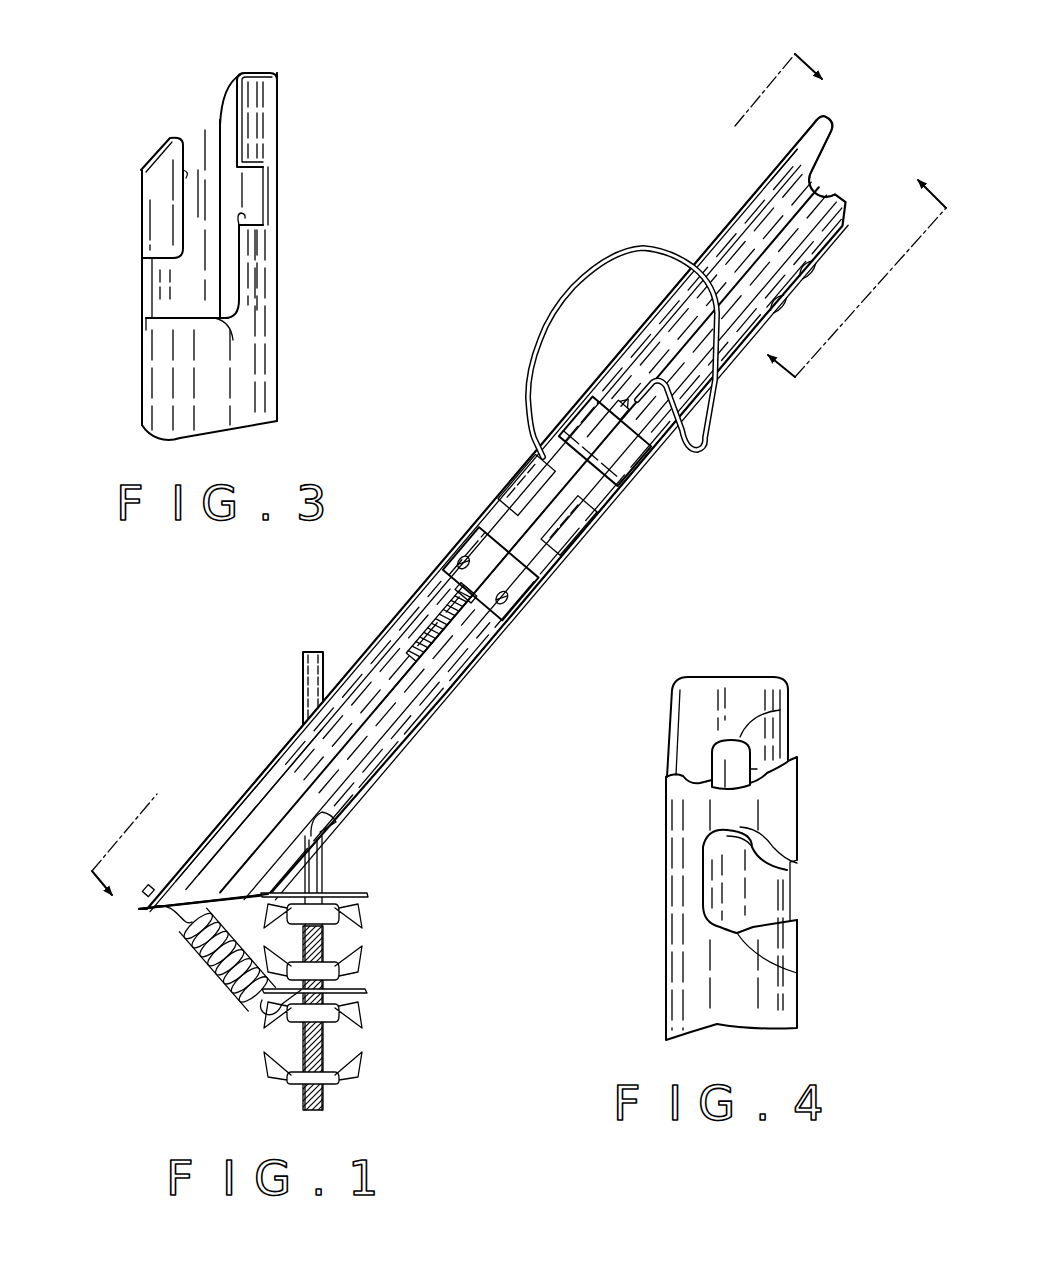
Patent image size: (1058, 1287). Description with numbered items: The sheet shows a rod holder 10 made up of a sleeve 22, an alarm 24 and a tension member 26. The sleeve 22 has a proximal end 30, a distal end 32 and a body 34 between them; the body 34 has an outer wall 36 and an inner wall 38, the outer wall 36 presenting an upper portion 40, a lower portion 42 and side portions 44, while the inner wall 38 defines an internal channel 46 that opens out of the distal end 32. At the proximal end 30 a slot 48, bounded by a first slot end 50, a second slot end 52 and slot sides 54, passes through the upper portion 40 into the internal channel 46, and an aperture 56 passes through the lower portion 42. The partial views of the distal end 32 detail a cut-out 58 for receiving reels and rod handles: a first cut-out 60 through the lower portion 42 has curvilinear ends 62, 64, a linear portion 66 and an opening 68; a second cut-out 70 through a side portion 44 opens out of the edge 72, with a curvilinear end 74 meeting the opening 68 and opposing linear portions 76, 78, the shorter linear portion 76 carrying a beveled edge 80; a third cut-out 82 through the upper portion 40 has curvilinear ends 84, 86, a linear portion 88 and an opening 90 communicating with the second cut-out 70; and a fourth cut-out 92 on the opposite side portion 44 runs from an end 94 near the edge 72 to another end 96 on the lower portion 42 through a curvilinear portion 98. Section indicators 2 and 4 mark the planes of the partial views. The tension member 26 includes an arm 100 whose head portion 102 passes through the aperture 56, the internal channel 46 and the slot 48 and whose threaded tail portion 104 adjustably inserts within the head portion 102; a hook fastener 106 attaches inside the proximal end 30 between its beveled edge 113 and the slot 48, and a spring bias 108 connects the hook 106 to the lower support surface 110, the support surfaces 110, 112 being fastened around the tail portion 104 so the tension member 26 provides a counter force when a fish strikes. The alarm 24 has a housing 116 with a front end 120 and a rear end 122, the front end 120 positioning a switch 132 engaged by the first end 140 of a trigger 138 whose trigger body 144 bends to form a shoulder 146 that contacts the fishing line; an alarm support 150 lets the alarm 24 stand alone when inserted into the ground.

In FIG. 1, the section line 2- 2 is at (468, 493).
In FIG. 1, the section lines 4- 4 is at (848, 263).
In FIG. 1, the rod holder 10 is at (438, 503).
In FIG. 1, the sleeve 22 is at (387, 610).
In FIG. 1, the alarm 24 is at (568, 479).
In FIG. 1, the tension member 26 is at (189, 991).
In FIG. 1, the proximal end 30 is at (187, 826).
In FIG. 3, the distal end 32 is at (320, 79).
In FIG. 4, the distal end 32 is at (825, 680).
In FIG. 1, the distal end 32 is at (781, 138).
In FIG. 3, the body 34 is at (277, 401).
In FIG. 3, the outer wall 36 is at (188, 168).
In FIG. 1, the outer wall 36 is at (751, 208).
In FIG. 3, the inner wall 38 is at (180, 168).
In FIG. 3, the upper portion 40 is at (277, 253).
In FIG. 1, the upper portion 40 is at (480, 510).
In FIG. 3, the lower portion 42 is at (142, 387).
In FIG. 4, the lower portion 42 is at (701, 979).
In FIG. 1, the lower portion 42 is at (440, 700).
In FIG. 3, the side portions 44 is at (241, 370).
In FIG. 1, the side portions 44 is at (352, 740).
In FIG. 3, the internal channel 46 is at (212, 228).
In FIG. 1, the slot 48 is at (254, 778).
In FIG. 1, the first slot end 50 is at (234, 804).
In FIG. 1, the second slot end 52 is at (330, 687).
In FIG. 1, the slot sides 54 is at (278, 754).
In FIG. 1, the aperture 56 is at (336, 822).
In FIG. 3, the cut-out 58 is at (300, 132).
In FIG. 3, the first cut-out 60 is at (163, 274).
In FIG. 1, the first cut-out 60 is at (795, 293).
In FIG. 3, the curvilinear end 62 is at (159, 226).
In FIG. 4, the curvilinear end 62 is at (738, 823).
In FIG. 3, the curvilinear end 64 is at (146, 322).
In FIG. 4, the curvilinear end 64 is at (738, 934).
In FIG. 3, the linear portion 66 is at (152, 288).
In FIG. 4, the linear portion 66 is at (701, 885).
In FIG. 3, the opening 68 is at (180, 298).
In FIG. 4, the opening 68 is at (792, 868).
In FIG. 3, the second cut-out 70 is at (183, 164).
In FIG. 3, the edge 72 is at (265, 74).
In FIG. 4, the edge 72 is at (726, 676).
In FIG. 1, the edge 72 is at (836, 120).
In FIG. 3, the curvilinear end 74 is at (211, 341).
In FIG. 3, the linear portion 76 is at (183, 205).
In FIG. 3, the linear portion 78 is at (243, 113).
In FIG. 3, the beveled edge 80 is at (163, 140).
In FIG. 4, the beveled edge 80 is at (712, 757).
In FIG. 3, the third cut-out 82 is at (250, 184).
In FIG. 4, the third cut-out 82 is at (751, 769).
In FIG. 1, the third cut-out 82 is at (781, 168).
In FIG. 4, the curvilinear end 84 is at (743, 728).
In FIG. 4, the curvilinear end 86 is at (760, 885).
In FIG. 3, the linear portion 88 is at (269, 199).
In FIG. 3, the opening 90 is at (245, 217).
In FIG. 3, the fourth cut-out 92 is at (212, 66).
In FIG. 4, the fourth cut-out 92 is at (674, 668).
In FIG. 1, the fourth cut-out 92 is at (819, 167).
In FIG. 3, the end 94 is at (245, 74).
In FIG. 4, the end 96 is at (675, 769).
In FIG. 3, the curvilinear portion 98 is at (216, 99).
In FIG. 4, the curvilinear portion 98 is at (668, 709).
In FIG. 1, the arm 100 is at (361, 973).
In FIG. 1, the head portion 102 is at (306, 656).
In FIG. 1, the tail portion 104 is at (325, 948).
In FIG. 1, the fastener 106 is at (175, 928).
In FIG. 1, the bias 108 is at (214, 976).
In FIG. 1, the support surface 110 is at (363, 988).
In FIG. 1, the support surface 112 is at (359, 897).
In FIG. 1, the beveled edge 113 is at (195, 863).
In FIG. 1, the housing 116 is at (593, 487).
In FIG. 1, the front end 120 is at (620, 463).
In FIG. 1, the rear end 122 is at (523, 602).
In FIG. 1, the switch 132 is at (635, 333).
In FIG. 1, the trigger 138 is at (554, 273).
In FIG. 1, the first end 140 is at (687, 445).
In FIG. 1, the trigger body 144 is at (641, 245).
In FIG. 1, the shoulder 146 is at (630, 405).
In FIG. 1, the alarm support 150 is at (437, 627).